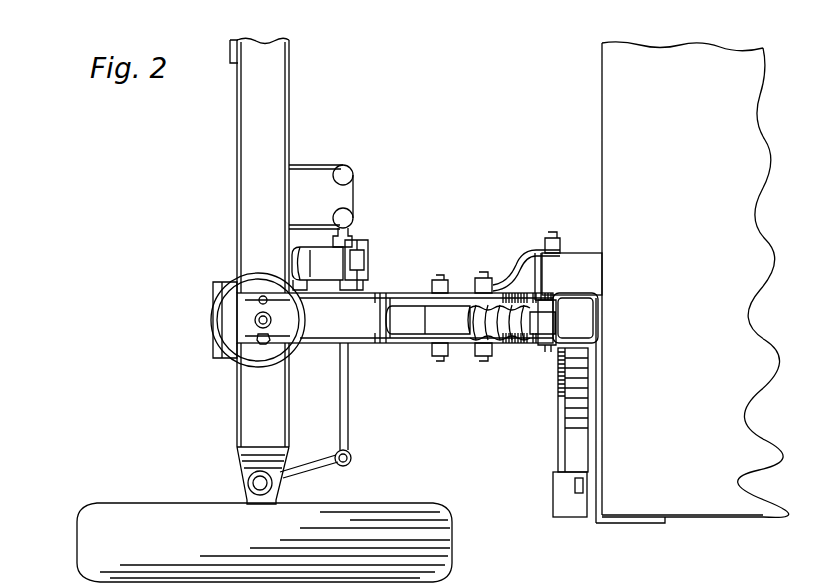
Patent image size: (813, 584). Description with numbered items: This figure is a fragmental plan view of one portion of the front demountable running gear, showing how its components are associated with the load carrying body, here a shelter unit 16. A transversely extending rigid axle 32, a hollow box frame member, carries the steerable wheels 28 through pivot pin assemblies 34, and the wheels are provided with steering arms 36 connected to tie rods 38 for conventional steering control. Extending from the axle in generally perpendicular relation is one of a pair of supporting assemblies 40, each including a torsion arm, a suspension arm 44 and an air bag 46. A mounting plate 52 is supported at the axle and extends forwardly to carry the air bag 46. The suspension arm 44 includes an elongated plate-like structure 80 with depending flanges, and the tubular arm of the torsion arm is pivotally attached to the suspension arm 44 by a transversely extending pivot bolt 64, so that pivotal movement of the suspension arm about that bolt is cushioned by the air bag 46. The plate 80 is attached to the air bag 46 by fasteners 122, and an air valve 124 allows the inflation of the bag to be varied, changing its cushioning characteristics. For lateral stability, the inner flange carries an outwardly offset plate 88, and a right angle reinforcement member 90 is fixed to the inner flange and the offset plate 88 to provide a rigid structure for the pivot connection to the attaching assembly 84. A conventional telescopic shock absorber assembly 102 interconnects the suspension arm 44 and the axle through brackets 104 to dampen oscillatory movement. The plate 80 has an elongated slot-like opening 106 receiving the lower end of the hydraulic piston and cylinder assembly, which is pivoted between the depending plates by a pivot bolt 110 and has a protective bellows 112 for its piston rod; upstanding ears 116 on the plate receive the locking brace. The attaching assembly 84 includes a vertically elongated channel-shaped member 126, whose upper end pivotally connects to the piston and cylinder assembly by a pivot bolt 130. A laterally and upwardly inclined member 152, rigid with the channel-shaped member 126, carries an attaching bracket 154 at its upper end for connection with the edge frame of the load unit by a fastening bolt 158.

The shelter unit 16 is at (752, 334).
The steerable wheels 28 is at (110, 548).
The rigid axle 32 is at (258, 181).
The pivot pin assemblies 34 is at (249, 486).
The steering arms 36 is at (310, 463).
The tie rods 38 is at (348, 411).
The supporting assemblies 40 is at (433, 271).
The suspension arm 44 is at (330, 330).
The air bag 46 is at (207, 337).
The mounting plate 52 is at (232, 290).
The pivot bolt 64 is at (482, 355).
The plate-like structure 80 is at (298, 305).
The attaching assembly 84 is at (577, 268).
The offset plate 88 is at (516, 259).
The right angle reinforcement member 90 is at (550, 246).
The telescopic shock absorber assembly 102 is at (340, 262).
The brackets 104 is at (364, 278).
The slot-like opening 106 is at (402, 340).
The pivot bolt 110 is at (440, 354).
The protective bellows 112 is at (518, 343).
The upstanding ears 116 is at (386, 294).
The fasteners 122 is at (232, 352).
The air valve 124 is at (256, 318).
The channel-shaped member 126 is at (592, 325).
The pivot bolt 130 is at (548, 296).
The laterally and upwardly inclined member 152 is at (568, 437).
The block 154 is at (555, 497).
The fastening bolt 158 is at (580, 487).